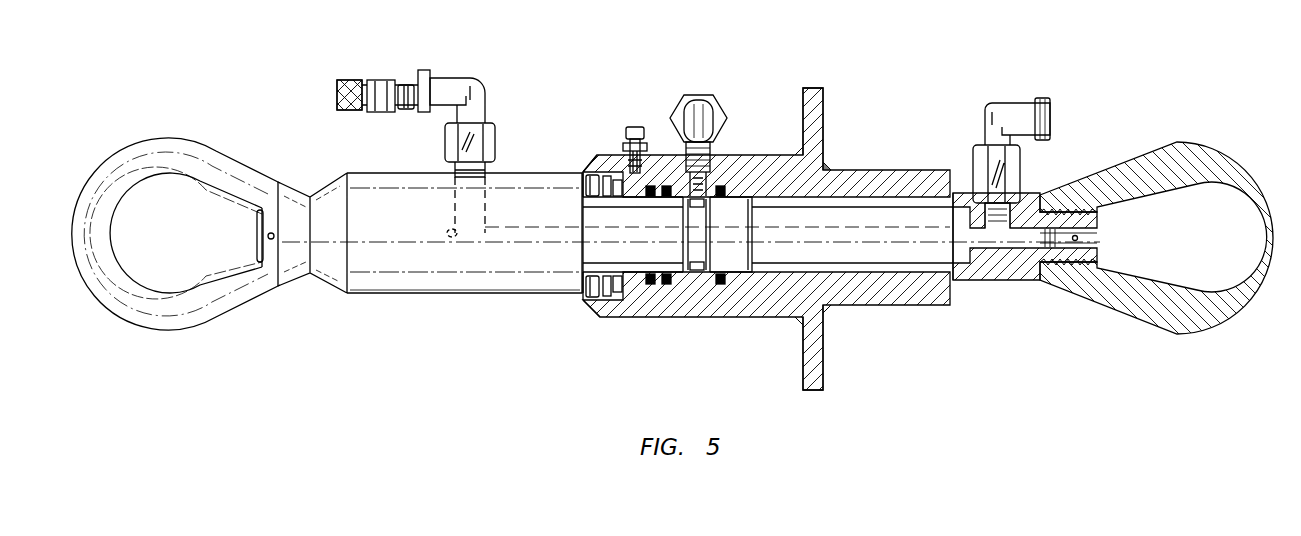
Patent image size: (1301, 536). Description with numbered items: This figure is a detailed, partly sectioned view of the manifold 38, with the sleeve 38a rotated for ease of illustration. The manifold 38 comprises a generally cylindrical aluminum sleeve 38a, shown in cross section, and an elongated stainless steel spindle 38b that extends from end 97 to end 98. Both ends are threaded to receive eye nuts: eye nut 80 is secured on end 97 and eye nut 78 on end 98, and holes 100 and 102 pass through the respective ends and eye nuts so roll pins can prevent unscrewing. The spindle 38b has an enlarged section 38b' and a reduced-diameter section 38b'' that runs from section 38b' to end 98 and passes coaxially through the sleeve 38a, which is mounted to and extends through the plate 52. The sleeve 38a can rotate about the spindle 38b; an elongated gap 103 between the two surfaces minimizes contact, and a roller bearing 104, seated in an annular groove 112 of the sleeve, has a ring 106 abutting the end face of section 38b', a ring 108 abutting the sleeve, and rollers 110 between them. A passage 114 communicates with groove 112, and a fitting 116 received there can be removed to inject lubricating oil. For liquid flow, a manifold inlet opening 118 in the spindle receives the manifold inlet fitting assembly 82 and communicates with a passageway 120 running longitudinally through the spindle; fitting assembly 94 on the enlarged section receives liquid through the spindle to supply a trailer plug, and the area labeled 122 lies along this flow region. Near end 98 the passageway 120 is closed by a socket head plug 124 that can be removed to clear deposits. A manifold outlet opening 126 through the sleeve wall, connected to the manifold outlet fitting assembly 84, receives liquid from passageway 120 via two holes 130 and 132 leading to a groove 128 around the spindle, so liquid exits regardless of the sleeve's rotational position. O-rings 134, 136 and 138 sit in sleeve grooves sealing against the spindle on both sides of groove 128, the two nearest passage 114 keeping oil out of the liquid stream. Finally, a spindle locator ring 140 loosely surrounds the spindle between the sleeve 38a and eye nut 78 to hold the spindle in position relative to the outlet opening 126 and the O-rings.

The manifold 38 is at (599, 70).
The eye nut 80 is at (195, 138).
The end of spindle 97 is at (257, 214).
The hole 100 is at (266, 233).
The enlarged section of spindle 38b' is at (464, 216).
The spindle 38b is at (717, 201).
The fitting assembly 94 is at (468, 76).
The fluid passage 122 is at (484, 212).
The sleeve 38a is at (883, 170).
The plate 52 is at (829, 108).
The elongated gap 103 is at (829, 168).
The roller bearing 104 is at (574, 181).
The rollers 110 is at (592, 174).
The annular groove 112 is at (606, 175).
The ring 106 is at (583, 295).
The ring 108 is at (604, 298).
The O-ring 134 is at (651, 286).
The O-ring 136 is at (667, 286).
The O-ring 138 is at (722, 286).
The fitting 116 is at (635, 126).
The passage 114 is at (646, 168).
The manifold outlet fitting assembly 84 is at (712, 150).
The groove 128 is at (708, 190).
The manifold outlet opening 126 is at (683, 192).
The hole 130 is at (700, 216).
The hole 132 is at (700, 246).
The passageway 120 is at (923, 232).
The spindle locator ring 140 is at (1011, 282).
The reduced-diameter section of spindle 38b'' is at (934, 213).
The end of spindle 98 is at (1100, 210).
The socket head plug 124 is at (1078, 263).
The hole 102 is at (1099, 240).
The manifold inlet fitting assembly 82 is at (991, 103).
The manifold inlet opening 118 is at (1026, 200).
The eye nut 78 is at (1146, 148).